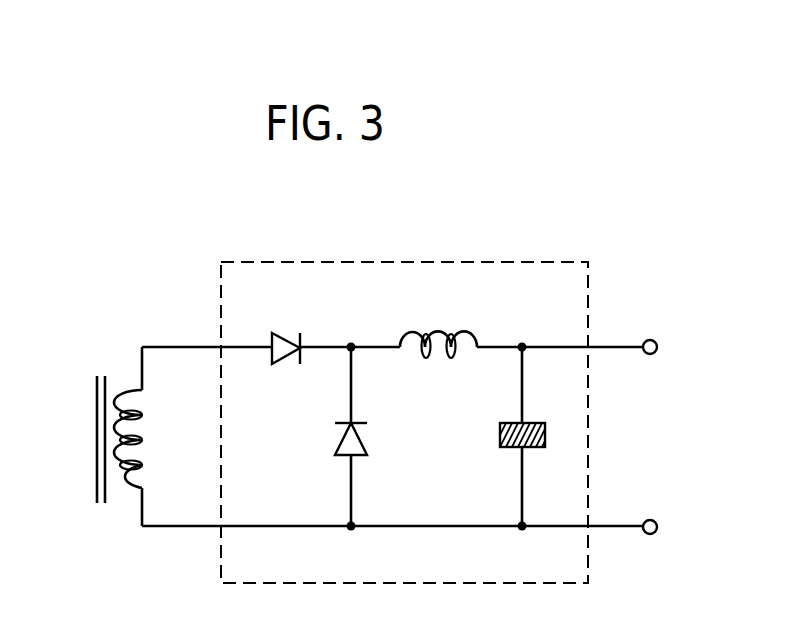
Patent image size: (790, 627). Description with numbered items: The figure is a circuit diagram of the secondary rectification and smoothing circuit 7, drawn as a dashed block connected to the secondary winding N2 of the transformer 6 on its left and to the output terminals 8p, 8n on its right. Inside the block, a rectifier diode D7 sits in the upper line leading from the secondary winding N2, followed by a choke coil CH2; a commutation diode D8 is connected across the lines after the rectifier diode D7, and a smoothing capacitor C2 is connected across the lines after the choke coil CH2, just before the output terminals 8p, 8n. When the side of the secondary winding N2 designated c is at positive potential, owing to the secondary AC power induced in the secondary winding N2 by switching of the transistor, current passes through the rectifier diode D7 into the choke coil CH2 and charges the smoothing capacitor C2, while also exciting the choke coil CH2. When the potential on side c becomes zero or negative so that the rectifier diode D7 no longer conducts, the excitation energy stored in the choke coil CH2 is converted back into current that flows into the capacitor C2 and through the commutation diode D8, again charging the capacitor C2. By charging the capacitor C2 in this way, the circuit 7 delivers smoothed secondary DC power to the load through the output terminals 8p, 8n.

The transformer 6 is at (95, 367).
The secondary rectification and smoothing circuit 7 is at (343, 260).
The output terminal 8p is at (652, 339).
The output terminal 8n is at (656, 532).
The secondary winding N2 is at (150, 439).
The rectifier diode D7 is at (287, 366).
The commutation diode D8 is at (325, 441).
The choke coil CH2 is at (438, 364).
The smoothing capacitor C2 is at (500, 437).